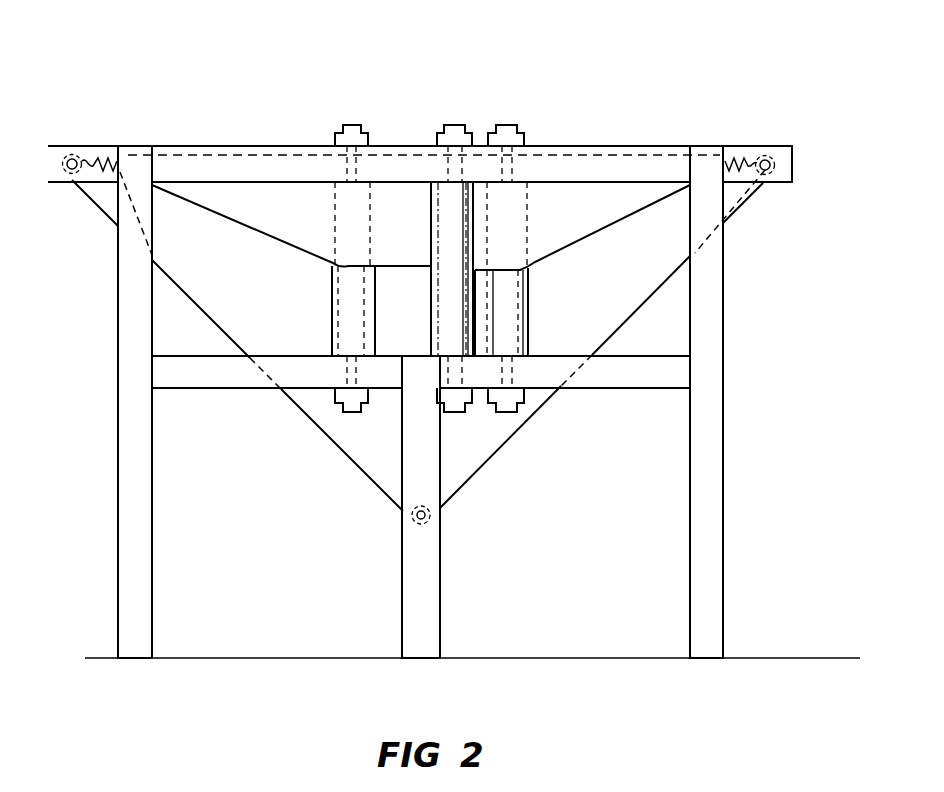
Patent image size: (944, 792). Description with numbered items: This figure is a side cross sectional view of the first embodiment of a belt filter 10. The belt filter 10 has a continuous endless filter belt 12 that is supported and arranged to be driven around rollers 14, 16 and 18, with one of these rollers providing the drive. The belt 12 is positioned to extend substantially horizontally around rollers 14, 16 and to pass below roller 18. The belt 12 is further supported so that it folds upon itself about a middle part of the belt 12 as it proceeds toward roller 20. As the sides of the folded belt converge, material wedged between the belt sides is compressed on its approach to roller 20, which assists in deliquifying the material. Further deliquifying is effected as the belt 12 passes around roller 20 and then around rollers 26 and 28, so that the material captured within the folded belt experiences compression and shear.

The belt filter 10 is at (741, 98).
The continuous endless filter belt 12 is at (752, 197).
The roller 14 is at (62, 188).
The roller 16 is at (783, 162).
The roller 18 is at (428, 520).
The roller 20 is at (348, 298).
The roller 26 is at (452, 290).
The roller 28 is at (510, 330).